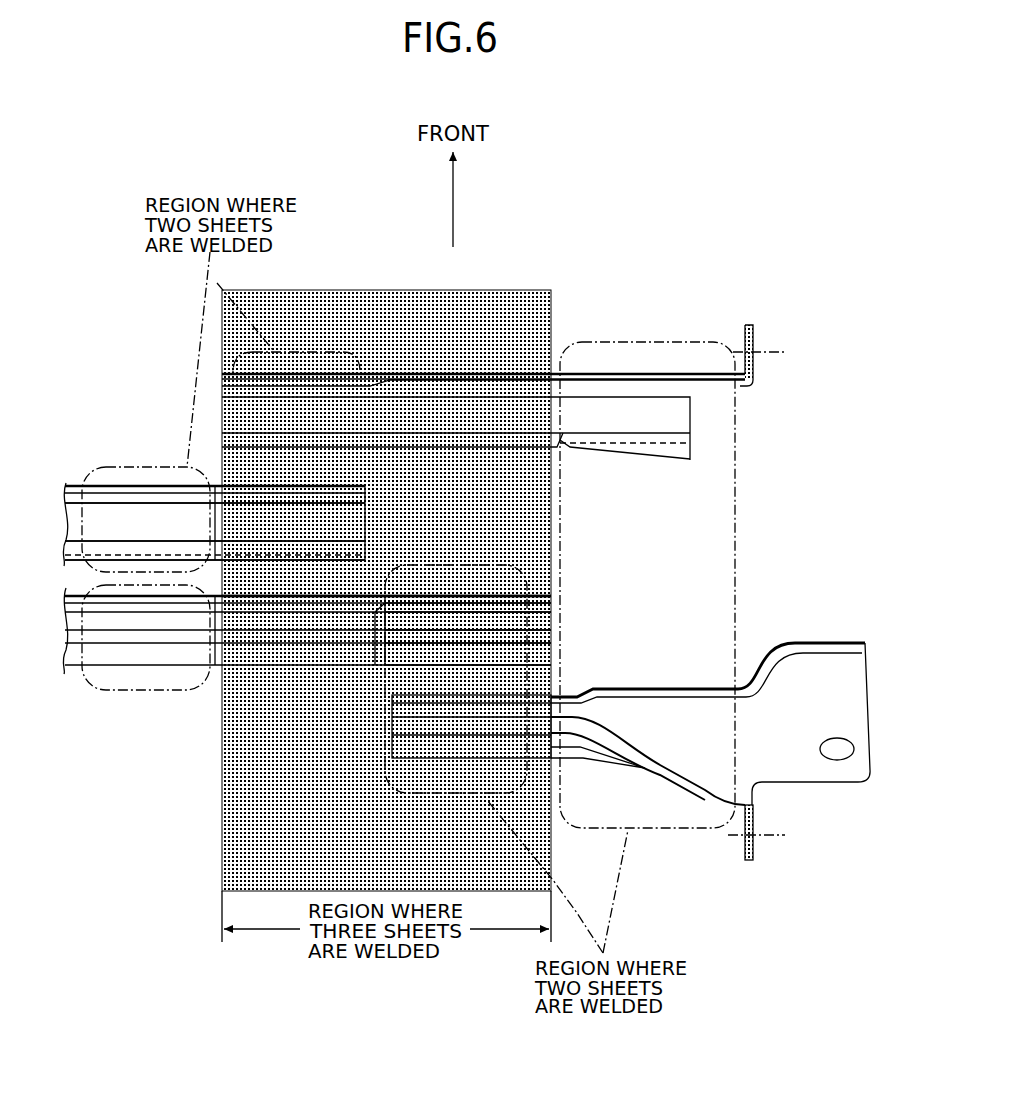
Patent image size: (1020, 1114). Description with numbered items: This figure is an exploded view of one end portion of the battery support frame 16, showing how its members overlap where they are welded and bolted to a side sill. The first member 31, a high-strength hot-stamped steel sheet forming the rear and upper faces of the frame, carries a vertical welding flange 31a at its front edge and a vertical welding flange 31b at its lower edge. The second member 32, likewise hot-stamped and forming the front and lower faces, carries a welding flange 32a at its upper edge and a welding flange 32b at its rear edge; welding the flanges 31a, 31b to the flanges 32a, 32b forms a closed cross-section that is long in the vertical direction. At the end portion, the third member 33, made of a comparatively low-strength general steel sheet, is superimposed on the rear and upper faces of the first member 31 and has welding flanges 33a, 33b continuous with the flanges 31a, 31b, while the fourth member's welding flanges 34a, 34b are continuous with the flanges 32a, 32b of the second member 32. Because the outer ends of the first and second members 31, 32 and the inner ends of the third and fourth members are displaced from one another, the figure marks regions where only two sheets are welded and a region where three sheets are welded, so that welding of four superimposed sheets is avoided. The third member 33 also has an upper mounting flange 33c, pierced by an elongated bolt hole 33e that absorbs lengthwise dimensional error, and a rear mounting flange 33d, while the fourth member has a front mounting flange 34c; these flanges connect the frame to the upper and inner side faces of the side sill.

The battery support frame 16 is at (151, 391).
The first member 31 is at (130, 674).
The welding flange 31a is at (497, 592).
The welding flange 31b is at (550, 676).
The second member 32 is at (138, 483).
The welding flange 32a is at (168, 489).
The welding flange 32b is at (178, 558).
The third member 33 is at (688, 802).
The welding flange 33a is at (684, 688).
The welding flange 33b is at (583, 760).
The upper mounting flange 33c is at (823, 687).
The rear mounting flange 33d is at (757, 852).
The bolt hole 33e is at (842, 760).
The welding flange 34a is at (606, 383).
The welding flange 34b is at (556, 492).
The front mounting flange 34c is at (754, 330).